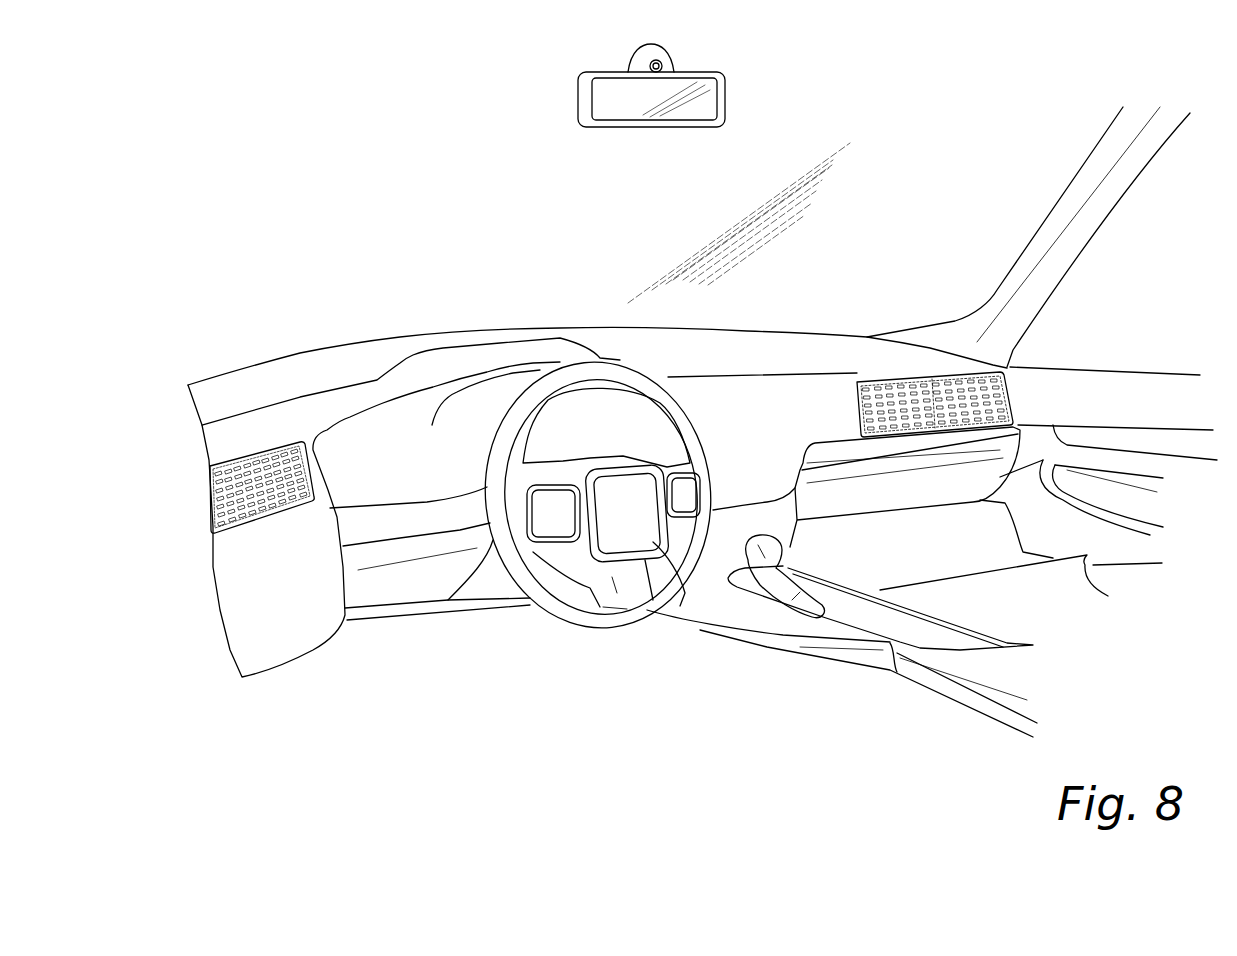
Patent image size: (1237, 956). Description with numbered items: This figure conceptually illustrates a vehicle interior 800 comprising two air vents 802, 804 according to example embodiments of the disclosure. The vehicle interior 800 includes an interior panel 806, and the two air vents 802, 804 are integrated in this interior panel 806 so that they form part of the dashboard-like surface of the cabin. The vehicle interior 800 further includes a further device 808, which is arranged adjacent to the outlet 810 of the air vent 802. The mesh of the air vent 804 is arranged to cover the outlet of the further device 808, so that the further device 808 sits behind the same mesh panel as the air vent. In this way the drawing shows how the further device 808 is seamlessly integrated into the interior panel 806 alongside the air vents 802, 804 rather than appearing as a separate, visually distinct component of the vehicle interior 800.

The vehicle interior 800 is at (894, 210).
The air vent 802 is at (248, 457).
The air vent 804 is at (930, 340).
The interior panel 806 is at (733, 410).
The further device 808 is at (1018, 348).
The outlet 810 is at (868, 378).